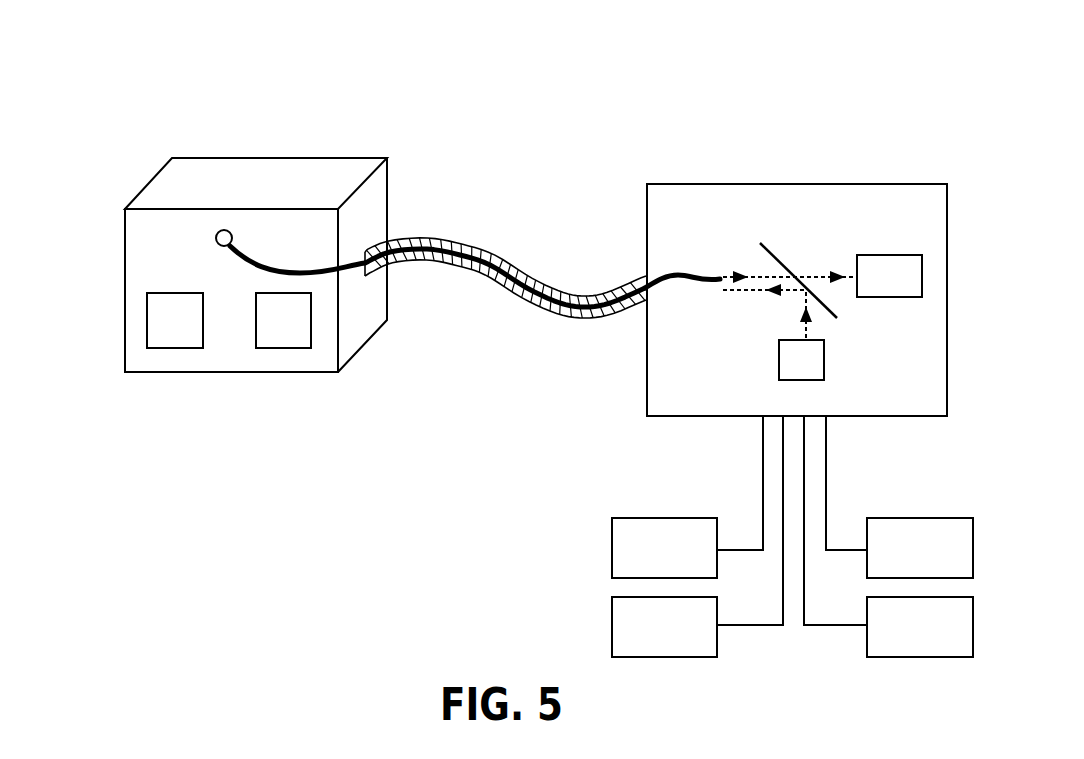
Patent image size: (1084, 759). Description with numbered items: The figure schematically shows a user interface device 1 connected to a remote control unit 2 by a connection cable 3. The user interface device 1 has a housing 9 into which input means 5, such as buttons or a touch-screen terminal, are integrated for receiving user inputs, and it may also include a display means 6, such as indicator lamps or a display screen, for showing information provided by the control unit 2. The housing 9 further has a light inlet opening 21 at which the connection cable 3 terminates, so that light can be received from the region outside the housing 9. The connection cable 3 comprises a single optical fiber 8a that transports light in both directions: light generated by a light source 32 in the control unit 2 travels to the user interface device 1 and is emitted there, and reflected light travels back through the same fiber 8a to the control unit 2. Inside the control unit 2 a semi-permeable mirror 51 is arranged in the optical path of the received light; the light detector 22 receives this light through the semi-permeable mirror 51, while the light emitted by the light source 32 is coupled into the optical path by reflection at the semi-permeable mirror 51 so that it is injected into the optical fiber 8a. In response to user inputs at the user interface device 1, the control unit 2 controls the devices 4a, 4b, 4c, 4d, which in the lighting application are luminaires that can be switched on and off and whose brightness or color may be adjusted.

The user interface device 1 is at (340, 110).
The housing 9 is at (140, 247).
The light inlet opening 21 is at (227, 230).
The input means 5 is at (177, 335).
The display means 6 is at (288, 335).
The connection cable 3 is at (490, 255).
The optical fiber 8a is at (700, 275).
The control unit 2 is at (699, 382).
The semi-permeable mirror 51 is at (783, 255).
The light detector 22 is at (883, 267).
The light source 32 is at (812, 368).
The controlled device 4a is at (678, 562).
The controlled device 4b is at (678, 641).
The controlled device 4c is at (935, 562).
The controlled device 4d is at (935, 641).